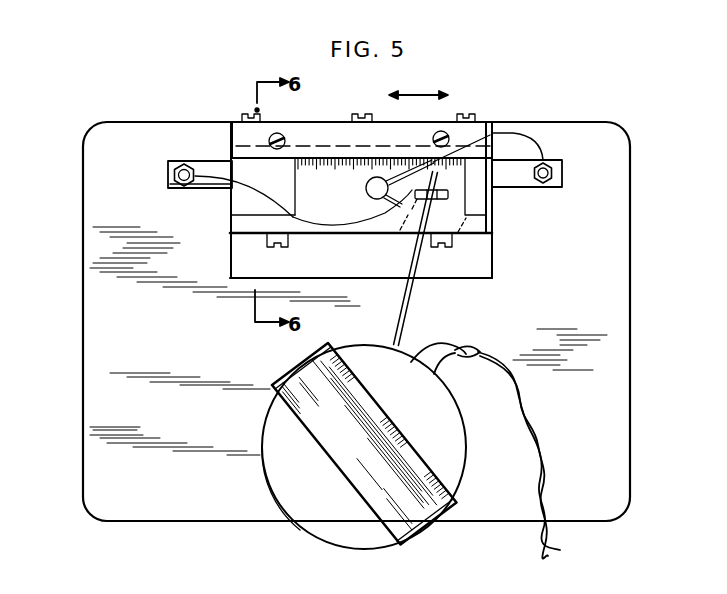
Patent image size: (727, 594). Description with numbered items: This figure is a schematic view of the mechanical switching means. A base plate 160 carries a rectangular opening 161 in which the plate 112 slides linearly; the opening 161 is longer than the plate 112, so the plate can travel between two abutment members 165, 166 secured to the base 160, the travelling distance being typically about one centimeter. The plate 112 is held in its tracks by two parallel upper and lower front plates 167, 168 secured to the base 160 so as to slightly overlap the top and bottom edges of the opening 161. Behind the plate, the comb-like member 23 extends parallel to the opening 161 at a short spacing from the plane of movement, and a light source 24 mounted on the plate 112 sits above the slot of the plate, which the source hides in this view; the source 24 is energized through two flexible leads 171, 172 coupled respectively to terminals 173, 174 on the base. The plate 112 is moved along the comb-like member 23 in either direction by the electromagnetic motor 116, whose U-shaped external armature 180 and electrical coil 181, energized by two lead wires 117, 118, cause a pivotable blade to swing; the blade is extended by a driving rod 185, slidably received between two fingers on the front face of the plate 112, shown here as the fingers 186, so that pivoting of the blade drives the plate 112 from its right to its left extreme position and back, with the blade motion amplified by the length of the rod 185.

The base plate 160 is at (113, 390).
The upper front plate 167 is at (240, 141).
The plate 112 is at (300, 160).
The comb-like member 23 is at (281, 185).
The abutment member 165 is at (228, 186).
The terminal 173 is at (178, 172).
The flexible lead 172 is at (507, 133).
The abutment member 166 is at (494, 170).
The terminal 174 is at (552, 170).
The rectangular opening 161 is at (250, 208).
The lower front plate 168 is at (256, 259).
The driving rod 185 is at (415, 262).
The flexible lead 171 is at (353, 227).
The light source 24 is at (366, 190).
The clamp and rod 186 is at (408, 226).
The motor 116 is at (362, 537).
The electrical coil 181 is at (297, 474).
The U-shaped external armature 180 is at (455, 483).
The lead wire 118 is at (498, 370).
The lead wire 117 is at (488, 355).